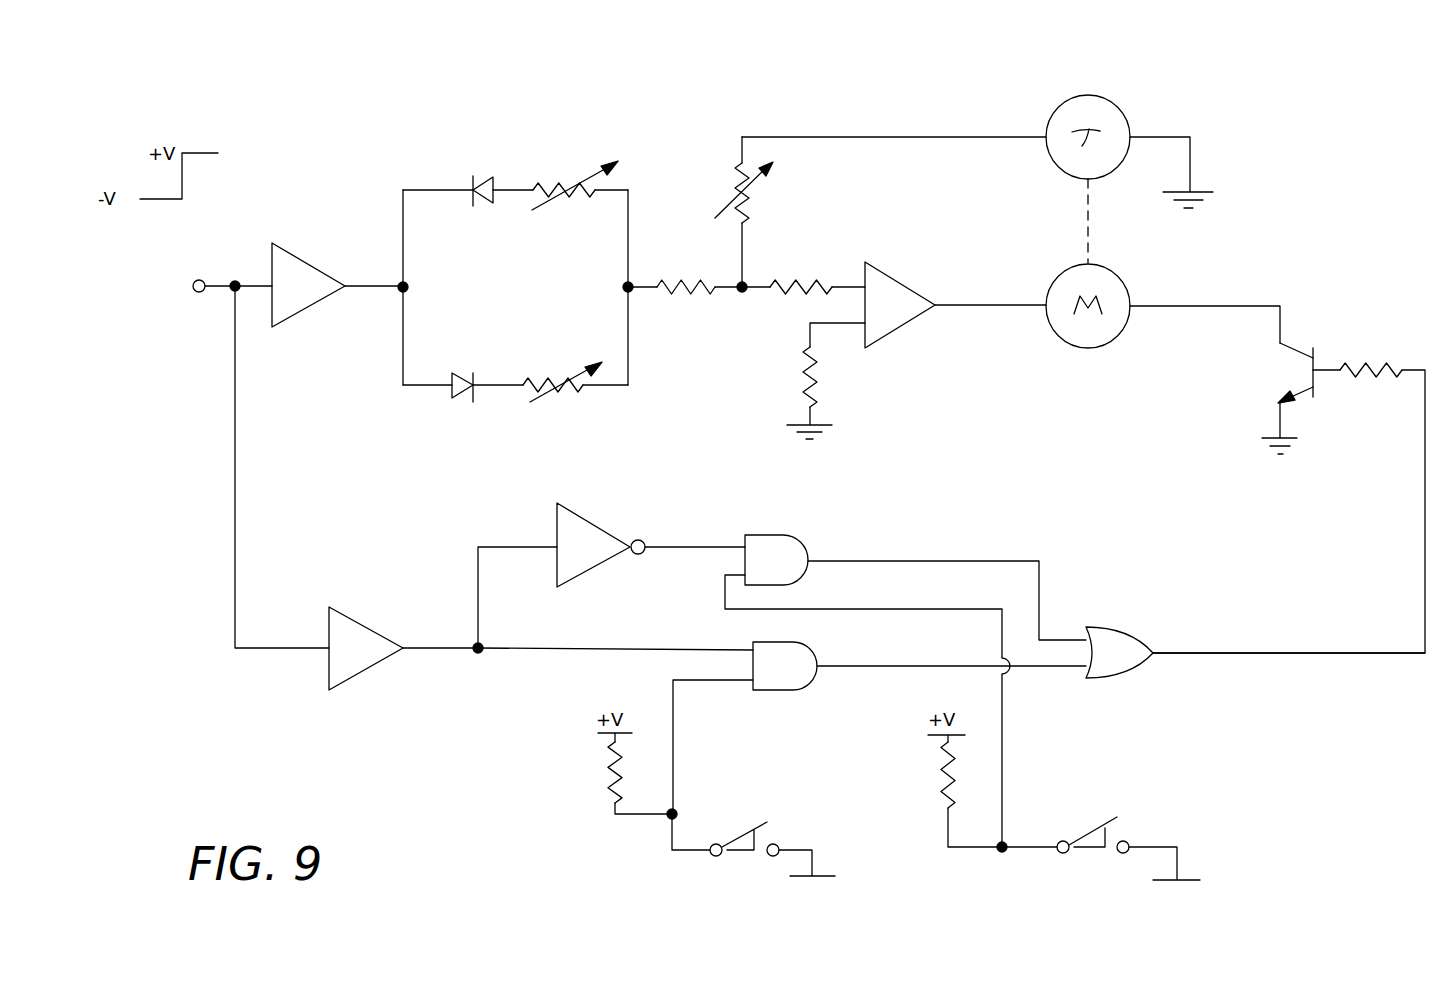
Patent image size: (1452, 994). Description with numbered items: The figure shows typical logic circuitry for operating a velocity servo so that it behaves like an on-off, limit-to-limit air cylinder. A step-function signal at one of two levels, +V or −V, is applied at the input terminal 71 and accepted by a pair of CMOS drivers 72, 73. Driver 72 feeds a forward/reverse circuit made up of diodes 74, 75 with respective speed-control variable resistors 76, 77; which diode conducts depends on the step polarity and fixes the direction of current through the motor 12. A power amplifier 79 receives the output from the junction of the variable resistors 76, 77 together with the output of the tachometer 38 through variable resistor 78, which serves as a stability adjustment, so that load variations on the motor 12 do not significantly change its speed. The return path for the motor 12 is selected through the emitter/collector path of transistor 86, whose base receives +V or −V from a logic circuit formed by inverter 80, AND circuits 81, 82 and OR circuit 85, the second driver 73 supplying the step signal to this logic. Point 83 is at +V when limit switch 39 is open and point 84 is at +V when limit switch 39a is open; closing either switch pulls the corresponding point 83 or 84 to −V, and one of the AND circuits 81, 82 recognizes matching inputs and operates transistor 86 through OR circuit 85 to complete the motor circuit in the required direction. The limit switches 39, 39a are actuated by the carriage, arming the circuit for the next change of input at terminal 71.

The motor 12 is at (1085, 348).
The tachometer 38 is at (1110, 100).
The limit switch 39 is at (740, 856).
The limit switch 39a is at (1090, 853).
The input terminal 71 is at (200, 280).
The CMOS driver 72 is at (300, 258).
The CMOS driver 73 is at (355, 678).
The diode 74 is at (487, 184).
The diode 75 is at (460, 392).
The variable resistor 76 is at (570, 197).
The variable resistor 77 is at (572, 392).
The variable resistor 78 is at (748, 212).
The power amplifier 79 is at (900, 283).
The inverter 80 is at (583, 573).
The AND circuit 81 is at (785, 535).
The AND circuit 82 is at (800, 642).
The point 83 is at (680, 812).
The point 84 is at (1010, 843).
The OR circuit 85 is at (1128, 630).
The transistor 86 is at (1318, 352).